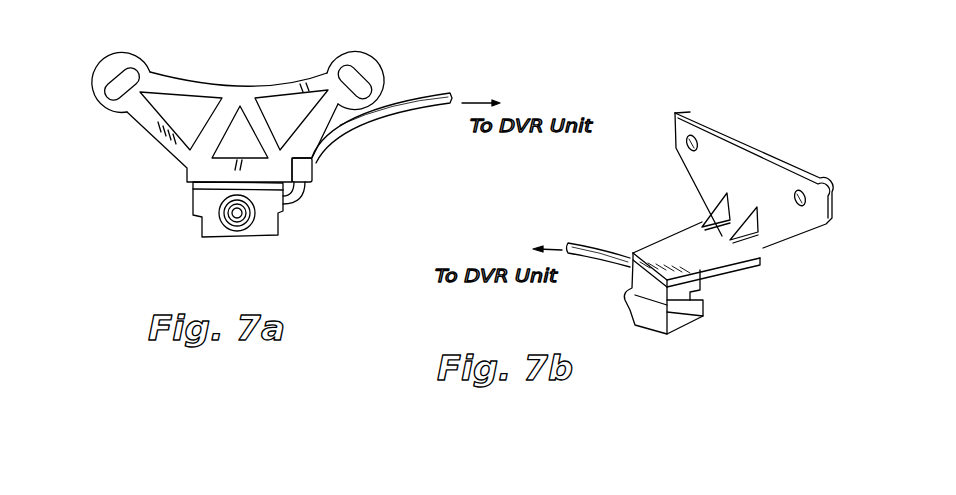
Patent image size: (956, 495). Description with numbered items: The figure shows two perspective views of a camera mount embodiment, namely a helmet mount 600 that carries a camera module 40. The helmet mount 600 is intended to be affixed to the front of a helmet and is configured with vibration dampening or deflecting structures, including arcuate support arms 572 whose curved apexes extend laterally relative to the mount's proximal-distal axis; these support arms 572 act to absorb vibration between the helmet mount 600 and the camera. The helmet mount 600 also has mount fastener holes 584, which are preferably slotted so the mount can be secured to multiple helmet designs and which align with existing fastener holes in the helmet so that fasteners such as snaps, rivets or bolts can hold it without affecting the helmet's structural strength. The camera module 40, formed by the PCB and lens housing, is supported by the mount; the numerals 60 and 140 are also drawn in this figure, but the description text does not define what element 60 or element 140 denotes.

In FIG. 7A, the camera module 40 is at (180, 216).
In FIG. 7B, the camera module 40 is at (623, 319).
In FIG. 7A, the camera lens 60 is at (237, 222).
In FIG. 7A, the cable to DVR unit 140 is at (355, 118).
In FIG. 7B, the cable to DVR unit 140 is at (592, 247).
In FIG. 7A, the arcuate support arm 572 is at (105, 110).
In FIG. 7A, the mount fastener hole 584 is at (115, 93).
In FIG. 7A, the helmet mount 600 is at (205, 70).
In FIG. 7B, the helmet mount 600 is at (663, 226).